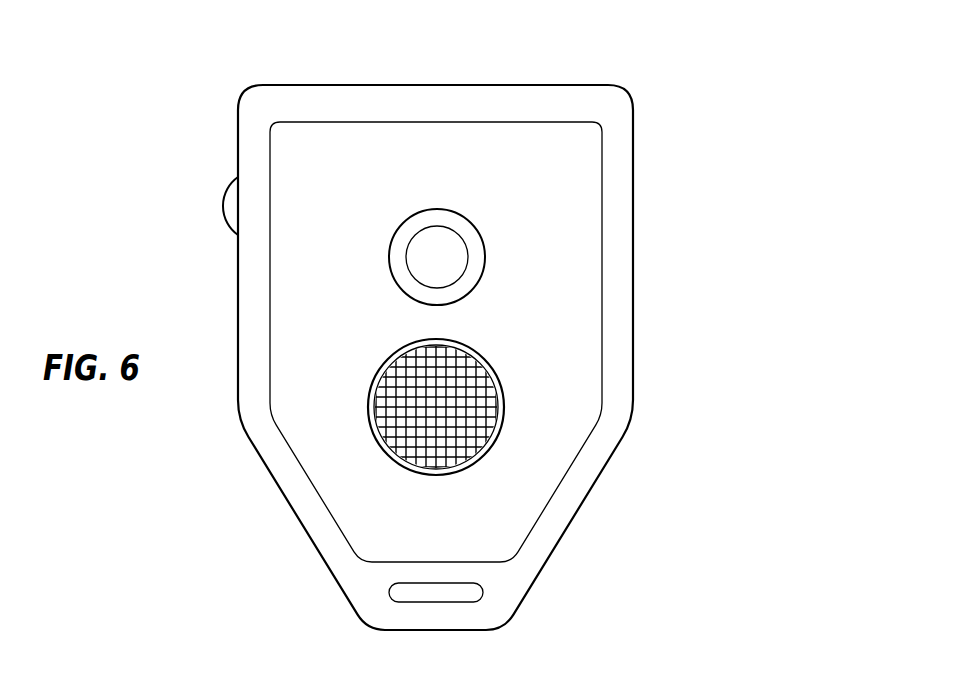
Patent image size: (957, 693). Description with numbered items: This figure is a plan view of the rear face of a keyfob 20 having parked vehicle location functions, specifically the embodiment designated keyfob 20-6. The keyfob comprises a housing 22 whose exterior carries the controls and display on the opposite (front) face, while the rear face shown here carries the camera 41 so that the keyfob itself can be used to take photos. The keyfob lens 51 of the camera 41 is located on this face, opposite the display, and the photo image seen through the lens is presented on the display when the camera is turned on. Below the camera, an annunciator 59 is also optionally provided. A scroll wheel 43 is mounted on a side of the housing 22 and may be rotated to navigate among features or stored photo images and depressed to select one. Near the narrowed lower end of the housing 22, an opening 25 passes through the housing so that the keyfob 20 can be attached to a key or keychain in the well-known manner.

The keyfob 20 is at (758, 111).
The housing 22 is at (634, 222).
The keyfob 20-6 is at (691, 308).
The scroll wheel 43 is at (222, 205).
The camera 41 is at (411, 219).
The keyfob lens 51 is at (449, 267).
The annunciator 59 is at (392, 355).
The opening 25 is at (389, 591).